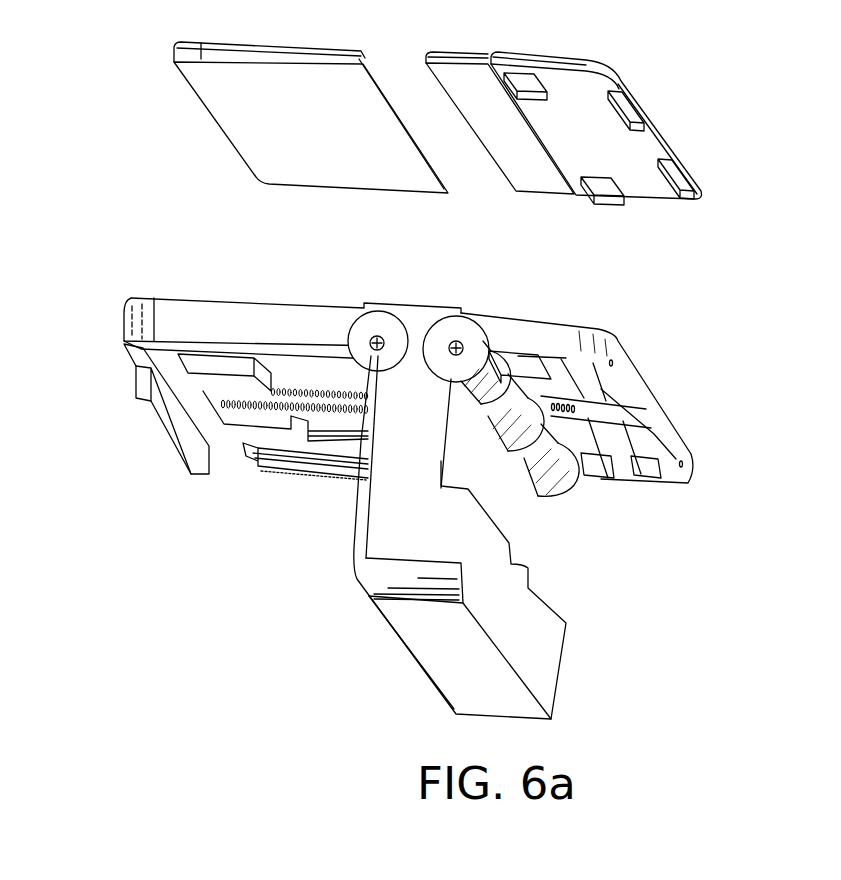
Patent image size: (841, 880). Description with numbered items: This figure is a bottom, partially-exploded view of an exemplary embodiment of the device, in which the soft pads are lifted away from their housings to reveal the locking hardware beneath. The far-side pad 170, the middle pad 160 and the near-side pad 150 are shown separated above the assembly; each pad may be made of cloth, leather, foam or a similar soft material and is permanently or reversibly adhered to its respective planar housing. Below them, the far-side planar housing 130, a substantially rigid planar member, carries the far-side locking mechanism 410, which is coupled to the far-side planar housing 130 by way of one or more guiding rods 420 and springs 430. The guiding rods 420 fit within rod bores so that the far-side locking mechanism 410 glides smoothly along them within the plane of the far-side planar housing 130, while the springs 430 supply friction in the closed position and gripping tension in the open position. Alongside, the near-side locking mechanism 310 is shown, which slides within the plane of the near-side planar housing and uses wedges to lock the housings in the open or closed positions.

The far-side planar housing 130 is at (290, 321).
The near-side pad 150 is at (652, 140).
The middle pad 160 is at (537, 178).
The far-side pad 170 is at (264, 140).
The near-side locking mechanism 310 is at (604, 422).
The far-side locking mechanism 410 is at (186, 398).
The guiding rods 420 is at (330, 447).
The springs 430 is at (272, 412).